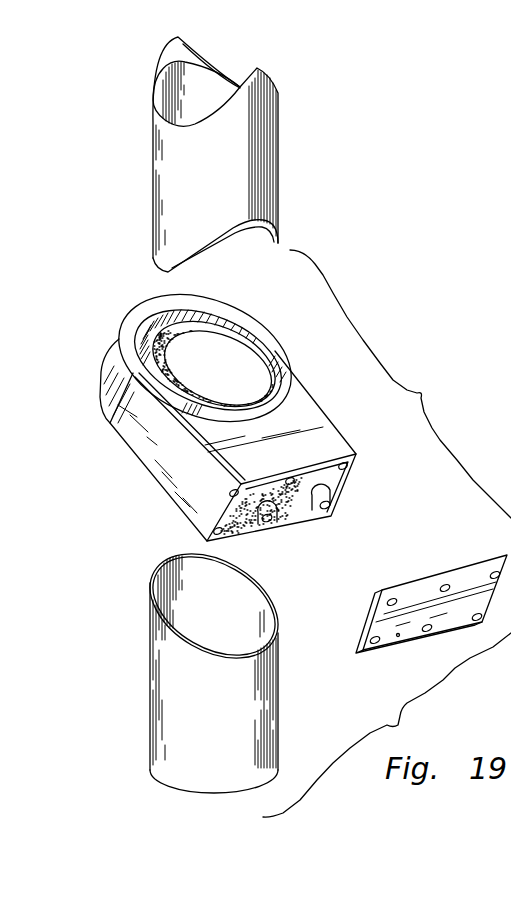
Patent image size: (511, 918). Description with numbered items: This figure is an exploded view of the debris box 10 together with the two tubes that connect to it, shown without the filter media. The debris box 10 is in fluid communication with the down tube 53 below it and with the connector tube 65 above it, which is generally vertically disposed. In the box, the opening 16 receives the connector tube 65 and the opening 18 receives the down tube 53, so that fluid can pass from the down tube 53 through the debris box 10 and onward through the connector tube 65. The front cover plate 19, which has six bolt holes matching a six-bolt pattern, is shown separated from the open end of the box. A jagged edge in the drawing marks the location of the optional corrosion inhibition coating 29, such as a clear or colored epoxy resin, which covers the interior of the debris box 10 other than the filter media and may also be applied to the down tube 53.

The debris box 10 is at (202, 412).
The opening for tube 65 16 is at (238, 335).
The opening for tube 53 18 is at (237, 383).
The front cover plate 19 is at (357, 653).
The corrosion inhibition coating 29 is at (300, 517).
The down tube 53 is at (163, 657).
The connector tube 65 is at (273, 163).